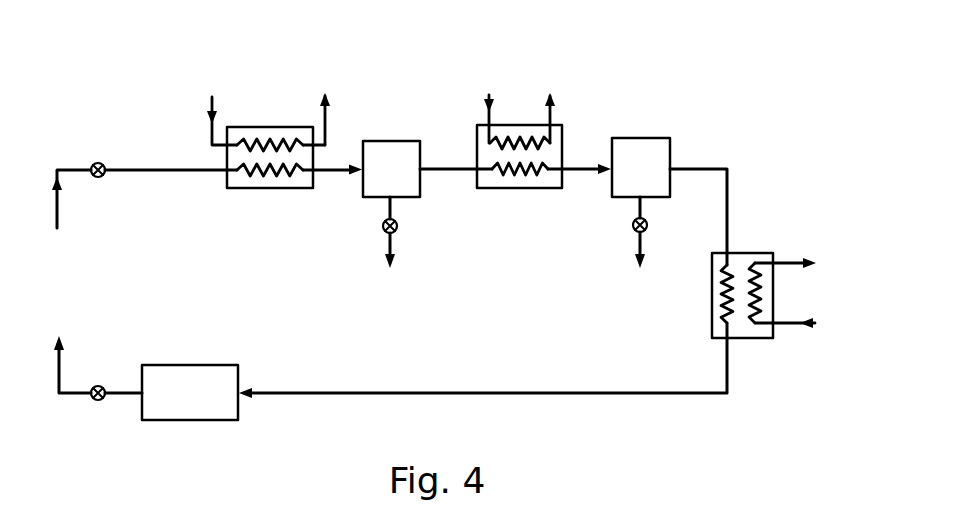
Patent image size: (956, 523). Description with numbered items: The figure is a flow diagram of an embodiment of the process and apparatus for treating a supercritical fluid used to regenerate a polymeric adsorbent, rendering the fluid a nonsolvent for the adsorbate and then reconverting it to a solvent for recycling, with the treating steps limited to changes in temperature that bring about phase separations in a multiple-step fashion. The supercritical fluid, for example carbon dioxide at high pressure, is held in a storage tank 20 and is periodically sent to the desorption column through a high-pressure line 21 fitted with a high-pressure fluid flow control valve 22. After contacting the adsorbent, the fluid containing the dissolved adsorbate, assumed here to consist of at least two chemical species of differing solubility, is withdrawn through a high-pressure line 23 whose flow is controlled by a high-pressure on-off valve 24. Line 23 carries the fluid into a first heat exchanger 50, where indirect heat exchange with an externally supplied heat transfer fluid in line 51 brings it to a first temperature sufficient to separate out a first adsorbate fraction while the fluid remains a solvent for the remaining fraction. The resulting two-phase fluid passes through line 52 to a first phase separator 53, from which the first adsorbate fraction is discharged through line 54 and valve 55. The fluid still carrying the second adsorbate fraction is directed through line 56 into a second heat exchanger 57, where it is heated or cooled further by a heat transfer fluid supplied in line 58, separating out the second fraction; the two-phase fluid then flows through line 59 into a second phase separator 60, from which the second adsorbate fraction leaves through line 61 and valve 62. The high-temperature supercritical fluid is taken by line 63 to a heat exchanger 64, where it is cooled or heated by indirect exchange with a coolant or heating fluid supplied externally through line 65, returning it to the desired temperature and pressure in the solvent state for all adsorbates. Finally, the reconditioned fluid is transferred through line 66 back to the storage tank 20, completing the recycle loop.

The storage tank 20 is at (197, 414).
The high-pressure line 21 is at (62, 370).
The high-pressure fluid flow control valve 22 is at (101, 400).
The high-pressure line 23 is at (158, 172).
The high-pressure on-off valve 24 is at (93, 165).
The first heat exchanger 50 is at (260, 185).
The heat transfer fluid line 51 is at (328, 137).
The line 52 is at (330, 175).
The first phase separator 53 is at (380, 150).
The line 54 is at (397, 247).
The valve 55 is at (398, 230).
The line 56 is at (450, 176).
The second heat exchanger 57 is at (522, 180).
The heat transfer fluid line 58 is at (553, 117).
The line 59 is at (587, 175).
The second phase separator 60 is at (632, 147).
The line 61 is at (645, 243).
The valve 62 is at (630, 227).
The line 63 is at (730, 218).
The heat exchanger 64 is at (715, 298).
The coolant line 65 is at (790, 258).
The line 66 is at (608, 394).